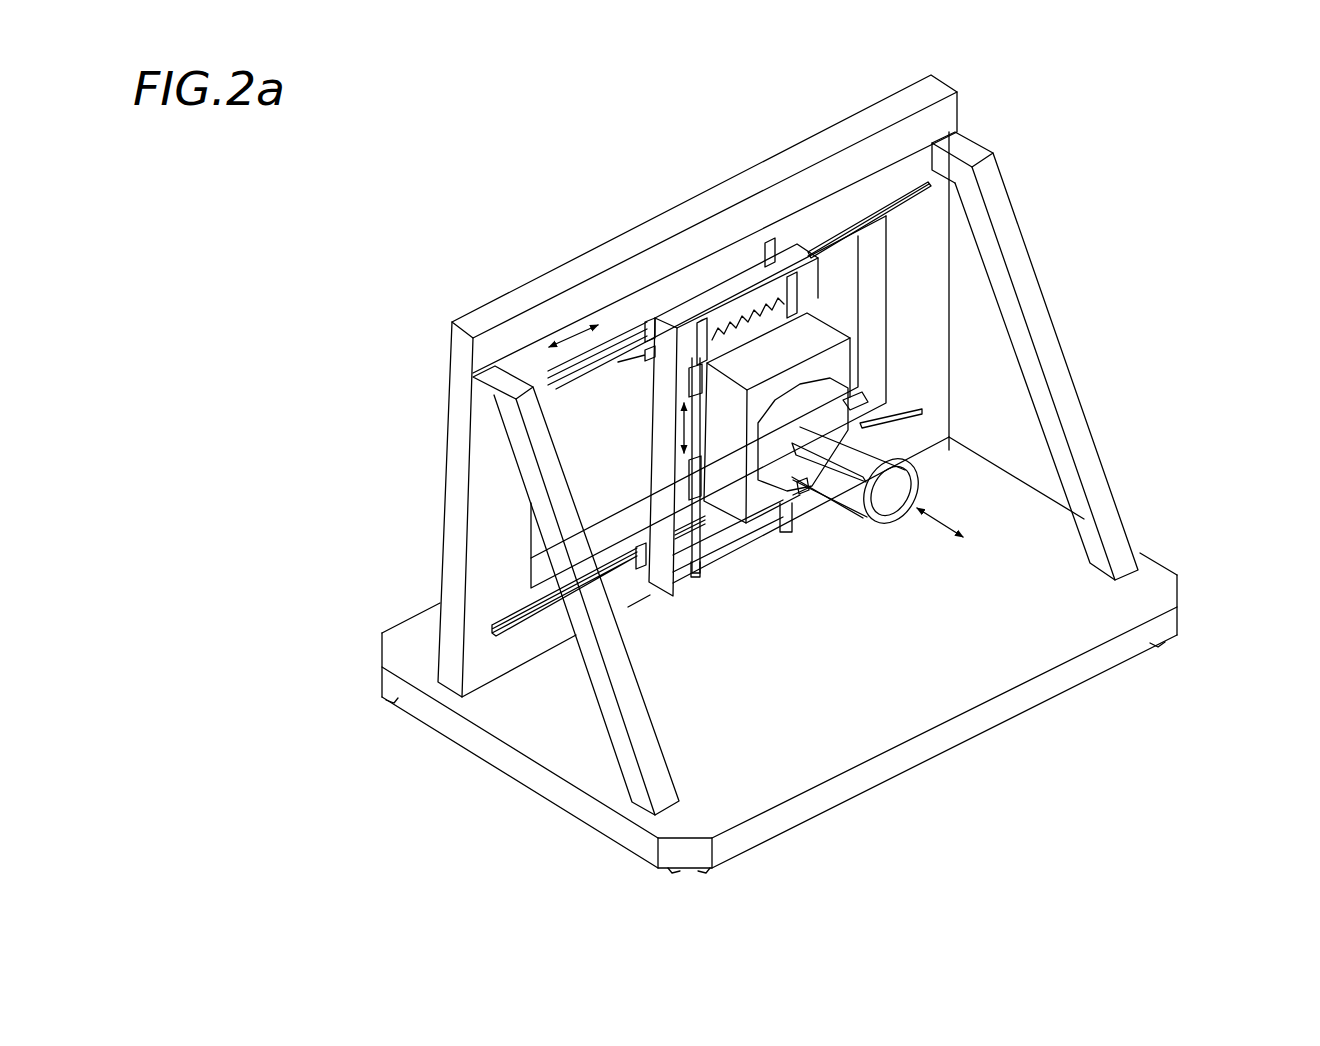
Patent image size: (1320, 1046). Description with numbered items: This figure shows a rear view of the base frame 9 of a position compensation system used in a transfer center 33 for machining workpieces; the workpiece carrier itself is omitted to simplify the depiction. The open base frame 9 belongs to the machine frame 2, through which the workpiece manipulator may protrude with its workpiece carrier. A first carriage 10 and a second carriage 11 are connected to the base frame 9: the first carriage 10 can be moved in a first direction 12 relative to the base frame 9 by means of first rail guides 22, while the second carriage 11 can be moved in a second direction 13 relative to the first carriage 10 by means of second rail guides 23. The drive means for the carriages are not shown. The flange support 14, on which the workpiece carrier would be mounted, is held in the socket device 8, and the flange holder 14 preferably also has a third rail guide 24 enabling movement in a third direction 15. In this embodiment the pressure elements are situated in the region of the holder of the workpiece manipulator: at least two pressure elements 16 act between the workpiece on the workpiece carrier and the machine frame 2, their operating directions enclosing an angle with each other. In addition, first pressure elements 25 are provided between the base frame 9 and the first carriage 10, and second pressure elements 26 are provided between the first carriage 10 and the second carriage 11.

The machine frame 2 is at (441, 343).
The socket device 8 is at (742, 343).
The base frame 9 is at (945, 113).
The first carriage 10 is at (707, 297).
The second carriage 11 is at (768, 353).
The first direction 12 is at (565, 338).
The second direction 13 is at (680, 430).
The flange support 14 is at (882, 507).
The third direction 15 is at (945, 512).
The pressure elements 16 is at (860, 406).
The first rail guides 22 is at (870, 198).
The second rail guides 23 is at (789, 536).
The third rail guide 24 is at (867, 535).
The first pressure elements 25 is at (573, 333).
The second pressure elements 26 is at (683, 382).
The transfer center 33 is at (1164, 247).